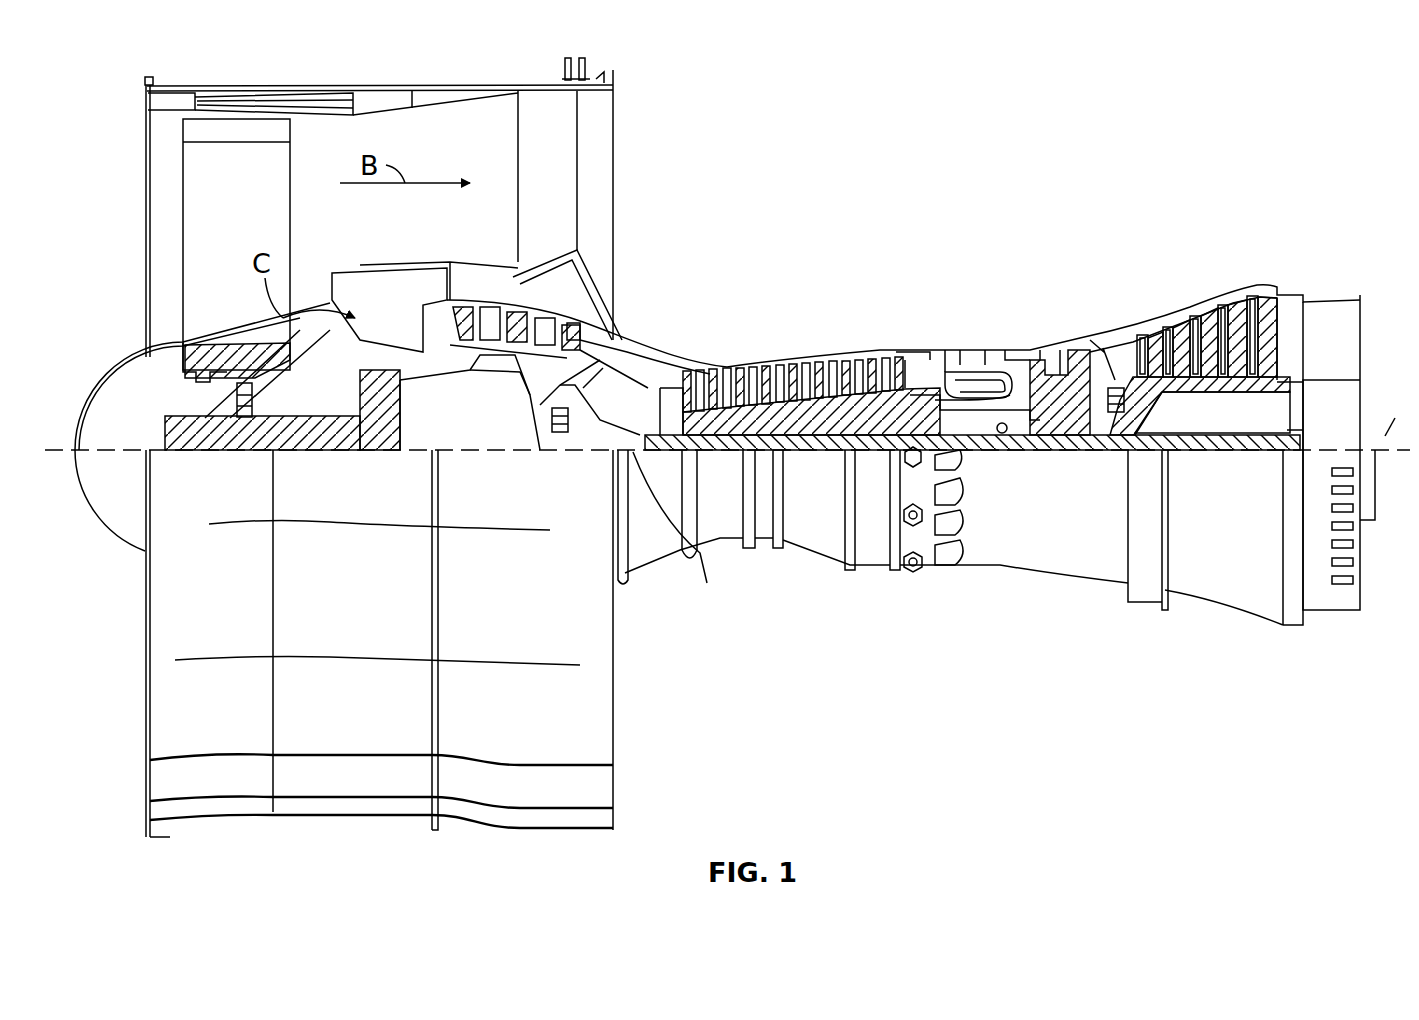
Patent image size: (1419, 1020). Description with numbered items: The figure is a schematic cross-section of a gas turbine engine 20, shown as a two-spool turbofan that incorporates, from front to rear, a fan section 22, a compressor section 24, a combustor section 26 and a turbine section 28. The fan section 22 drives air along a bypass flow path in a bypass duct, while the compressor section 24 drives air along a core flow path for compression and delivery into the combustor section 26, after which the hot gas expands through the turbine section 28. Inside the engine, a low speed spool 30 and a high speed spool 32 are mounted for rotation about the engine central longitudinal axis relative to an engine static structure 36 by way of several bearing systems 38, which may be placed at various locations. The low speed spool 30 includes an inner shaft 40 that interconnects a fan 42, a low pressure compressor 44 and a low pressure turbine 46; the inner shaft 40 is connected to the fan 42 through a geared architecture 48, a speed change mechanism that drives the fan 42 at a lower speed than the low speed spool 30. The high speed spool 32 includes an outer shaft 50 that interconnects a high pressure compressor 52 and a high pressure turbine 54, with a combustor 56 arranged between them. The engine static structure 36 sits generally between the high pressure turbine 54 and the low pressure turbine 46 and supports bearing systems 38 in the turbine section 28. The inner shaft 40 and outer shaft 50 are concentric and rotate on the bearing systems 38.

The gas turbine engine 20 is at (1230, 118).
The fan section 22 is at (235, 82).
The compressor section 24 is at (812, 258).
The combustor section 26 is at (994, 247).
The turbine section 28 is at (1175, 232).
The low speed spool 30 is at (832, 456).
The high speed spool 32 is at (880, 400).
The engine static structure 36 is at (880, 573).
The bearing systems 38 is at (245, 417).
The inner shaft 40 is at (697, 556).
The fan 42 is at (258, 240).
The low pressure compressor 44 is at (527, 355).
The low pressure turbine 46 is at (1215, 310).
The geared architecture 48 is at (383, 420).
The outer shaft 50 is at (1005, 433).
The high pressure compressor 52 is at (797, 420).
The high pressure turbine 54 is at (1055, 350).
The combustor 56 is at (985, 375).